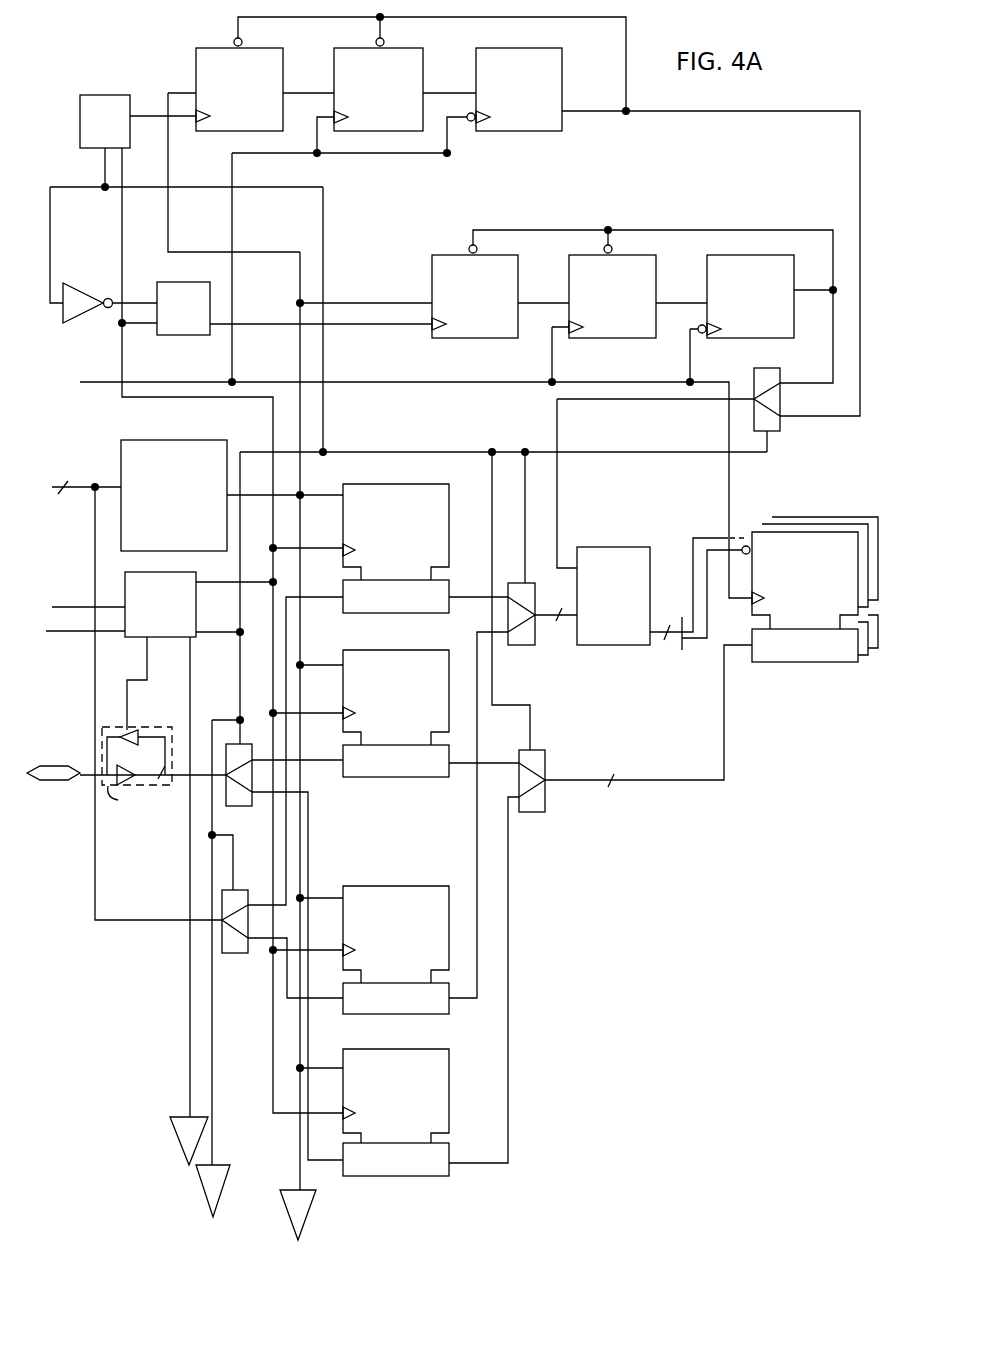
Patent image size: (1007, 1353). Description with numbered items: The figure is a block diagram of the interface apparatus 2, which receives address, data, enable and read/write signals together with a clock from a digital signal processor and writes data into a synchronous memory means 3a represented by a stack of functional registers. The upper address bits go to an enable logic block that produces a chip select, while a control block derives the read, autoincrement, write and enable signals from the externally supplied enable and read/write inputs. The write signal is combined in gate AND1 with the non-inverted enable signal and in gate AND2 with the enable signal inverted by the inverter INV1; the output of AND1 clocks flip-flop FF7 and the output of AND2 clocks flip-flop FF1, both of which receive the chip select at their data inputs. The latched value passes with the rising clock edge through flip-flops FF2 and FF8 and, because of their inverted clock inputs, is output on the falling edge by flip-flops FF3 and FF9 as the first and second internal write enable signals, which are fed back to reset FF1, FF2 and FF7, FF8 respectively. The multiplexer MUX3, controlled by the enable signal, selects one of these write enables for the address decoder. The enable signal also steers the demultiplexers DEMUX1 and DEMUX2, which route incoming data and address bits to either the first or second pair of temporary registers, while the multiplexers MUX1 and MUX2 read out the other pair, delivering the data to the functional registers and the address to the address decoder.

The interface apparatus 2 is at (448, 626).
The synchronous memory means 3a is at (803, 675).
The flip-flop means FF1 is at (432, 262).
The flip-flop means FF2 is at (660, 270).
The flip-flop means FF3 is at (706, 272).
The flip-flop means FF7 is at (196, 56).
The flip-flop means FF8 is at (334, 56).
The flip-flop means FF9 is at (556, 50).
The multiplexing means MUX1 is at (537, 812).
The multiplexing means MUX2 is at (522, 645).
The multiplexer MUX3 is at (775, 431).
The demultiplexing means DEMUX1 is at (243, 806).
The demultiplexing means DEMUX2 is at (235, 953).
The AND gate AND1 is at (105, 121).
The AND gate AND2 is at (183, 308).
The inverter INV1 is at (86, 312).